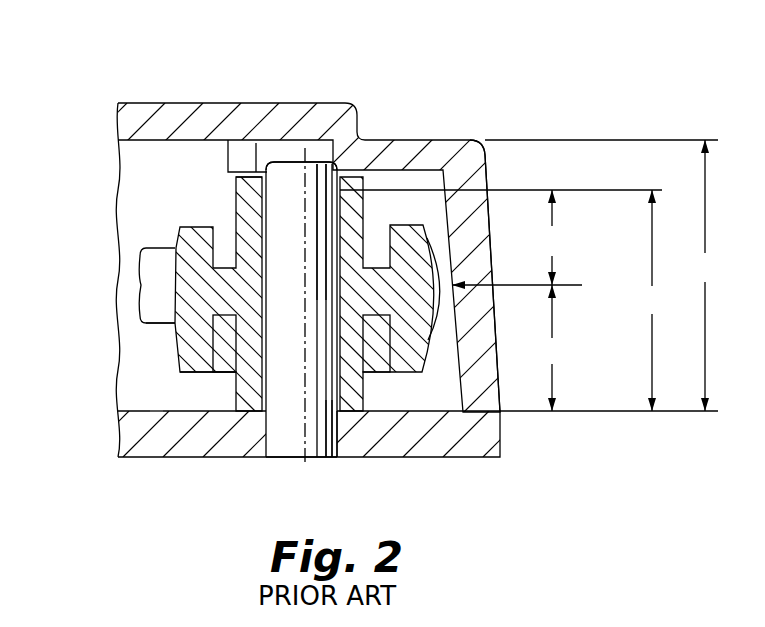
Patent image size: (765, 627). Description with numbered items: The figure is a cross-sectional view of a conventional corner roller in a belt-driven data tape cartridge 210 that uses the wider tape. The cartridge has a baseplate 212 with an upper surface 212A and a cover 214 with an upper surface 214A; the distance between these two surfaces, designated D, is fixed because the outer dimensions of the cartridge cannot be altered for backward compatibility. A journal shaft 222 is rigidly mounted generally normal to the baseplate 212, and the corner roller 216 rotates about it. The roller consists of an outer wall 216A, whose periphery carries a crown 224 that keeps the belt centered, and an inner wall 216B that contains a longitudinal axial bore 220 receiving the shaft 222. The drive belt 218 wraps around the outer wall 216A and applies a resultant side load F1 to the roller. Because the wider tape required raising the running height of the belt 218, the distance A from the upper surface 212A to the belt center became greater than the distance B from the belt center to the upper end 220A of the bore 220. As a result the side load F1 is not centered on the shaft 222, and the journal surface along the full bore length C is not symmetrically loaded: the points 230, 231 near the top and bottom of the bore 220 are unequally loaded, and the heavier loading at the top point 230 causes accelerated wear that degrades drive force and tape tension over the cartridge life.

The data tape cartridge 210 is at (478, 70).
The baseplate 212 is at (150, 448).
The upper surface of the baseplate 212A is at (150, 411).
The cover 214 is at (388, 152).
The upper surface of the cover 214A is at (438, 134).
The corner roller 216 is at (168, 234).
The outer wall 216A is at (200, 356).
The inner wall 216B is at (240, 222).
The belt 218 is at (152, 328).
The bore 220 is at (270, 390).
The upper end of the bore 220A is at (287, 161).
The journal shaft 222 is at (300, 458).
The crown 224 is at (168, 296).
The top point of the bore 230 is at (310, 190).
The bottom point of the bore 231 is at (342, 458).
The distance A is at (553, 348).
The distance B is at (553, 237).
The bore length C is at (651, 300).
The cartridge height D is at (706, 275).
The belt side load F1 is at (534, 289).